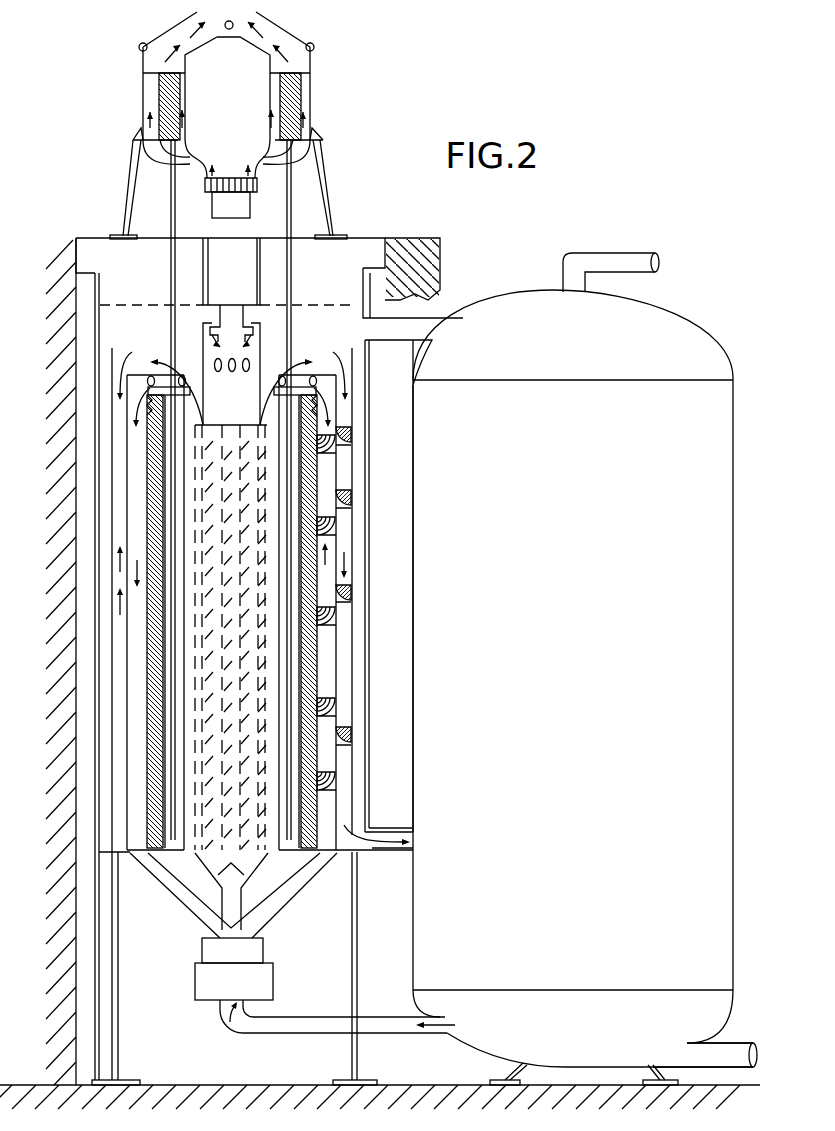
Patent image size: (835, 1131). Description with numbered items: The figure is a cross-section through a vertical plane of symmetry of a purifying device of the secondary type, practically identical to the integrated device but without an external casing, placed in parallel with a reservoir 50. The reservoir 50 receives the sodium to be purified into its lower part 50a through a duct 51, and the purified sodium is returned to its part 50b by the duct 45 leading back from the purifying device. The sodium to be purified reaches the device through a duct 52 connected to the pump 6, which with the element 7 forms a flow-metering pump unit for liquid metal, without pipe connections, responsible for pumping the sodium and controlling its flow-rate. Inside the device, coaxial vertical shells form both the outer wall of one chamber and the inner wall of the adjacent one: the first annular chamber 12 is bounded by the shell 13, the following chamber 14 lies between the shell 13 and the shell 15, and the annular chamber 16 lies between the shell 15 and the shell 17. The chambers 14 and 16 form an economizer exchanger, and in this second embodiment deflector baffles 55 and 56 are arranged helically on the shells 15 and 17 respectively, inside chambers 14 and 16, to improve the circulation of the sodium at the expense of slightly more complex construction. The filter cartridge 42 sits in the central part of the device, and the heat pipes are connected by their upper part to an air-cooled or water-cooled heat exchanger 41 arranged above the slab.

The heat exchanger 41 is at (305, 98).
The filter cartridge 42 is at (253, 250).
The first annular chamber 12 is at (105, 628).
The annular chamber 14 is at (114, 712).
The annular chamber 16 is at (129, 676).
The baffle 56 is at (352, 433).
The baffle 55 is at (340, 484).
The shell 13 is at (354, 477).
The shell 15 is at (336, 520).
The shell 17 is at (318, 598).
The duct 45 is at (380, 840).
The flow-metering pump 7 is at (208, 947).
The pump 6 is at (203, 983).
The duct 52 is at (382, 1025).
The reservoir 50 is at (588, 669).
The upper part of the reservoir 50b is at (655, 400).
The lower part of the reservoir 50a is at (552, 1023).
The duct 51 is at (725, 1053).